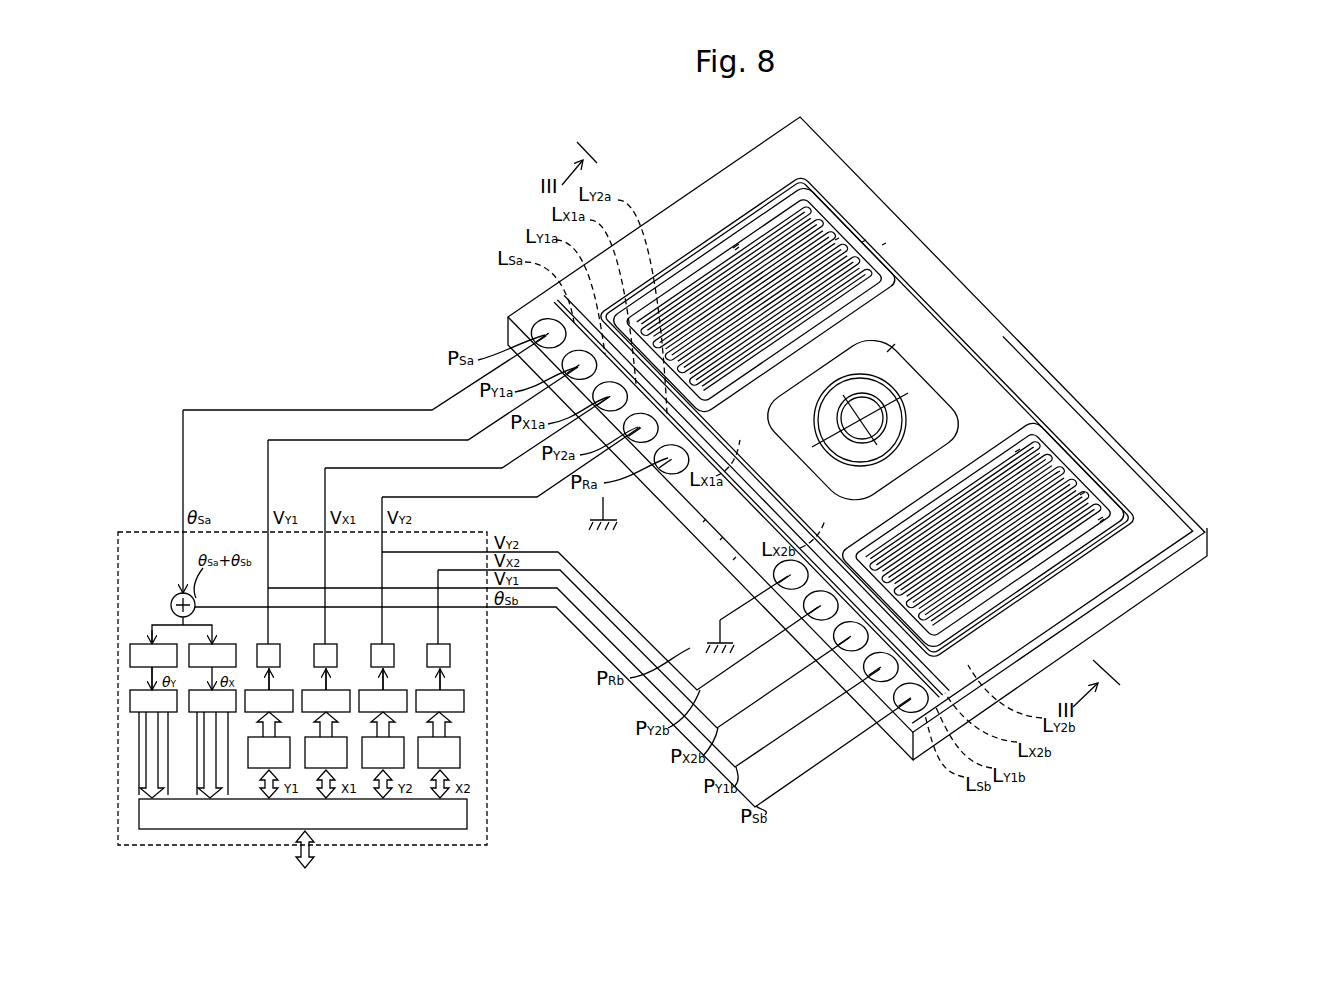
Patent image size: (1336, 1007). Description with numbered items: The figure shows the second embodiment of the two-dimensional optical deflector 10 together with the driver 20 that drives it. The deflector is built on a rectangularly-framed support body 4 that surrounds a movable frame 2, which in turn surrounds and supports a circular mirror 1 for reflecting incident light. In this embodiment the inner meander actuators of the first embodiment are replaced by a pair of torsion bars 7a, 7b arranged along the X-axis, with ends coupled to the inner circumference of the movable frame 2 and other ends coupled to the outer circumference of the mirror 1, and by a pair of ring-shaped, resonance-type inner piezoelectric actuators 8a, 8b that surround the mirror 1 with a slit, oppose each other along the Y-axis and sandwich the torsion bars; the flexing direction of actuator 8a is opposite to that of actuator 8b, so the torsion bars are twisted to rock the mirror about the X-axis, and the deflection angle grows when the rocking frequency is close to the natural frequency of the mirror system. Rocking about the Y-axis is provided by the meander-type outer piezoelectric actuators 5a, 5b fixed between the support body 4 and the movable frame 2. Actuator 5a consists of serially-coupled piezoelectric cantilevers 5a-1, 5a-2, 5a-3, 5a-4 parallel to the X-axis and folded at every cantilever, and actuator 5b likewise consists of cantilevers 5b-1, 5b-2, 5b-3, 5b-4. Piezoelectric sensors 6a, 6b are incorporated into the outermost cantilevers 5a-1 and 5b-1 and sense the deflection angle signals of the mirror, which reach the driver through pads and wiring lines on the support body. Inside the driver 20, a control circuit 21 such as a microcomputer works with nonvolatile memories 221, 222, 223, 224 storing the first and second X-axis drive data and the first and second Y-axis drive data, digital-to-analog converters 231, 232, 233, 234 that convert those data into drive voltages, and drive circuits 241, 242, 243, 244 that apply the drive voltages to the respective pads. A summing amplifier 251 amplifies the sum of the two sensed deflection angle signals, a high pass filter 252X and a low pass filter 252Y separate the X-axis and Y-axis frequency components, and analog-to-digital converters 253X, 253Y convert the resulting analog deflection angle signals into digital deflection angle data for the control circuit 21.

The two-dimensional optical deflector 10 is at (1103, 172).
The support body 4 is at (1152, 528).
The meander-type outer piezoelectric actuator 5a is at (1030, 143).
The piezoelectric cantilever 5a-1 is at (733, 248).
The piezoelectric sensor 6a is at (737, 248).
The piezoelectric cantilever 5a-2 is at (835, 240).
The piezoelectric cantilever 5a-3 is at (862, 242).
The piezoelectric cantilever 5a-4 is at (882, 245).
The meander-type outer piezoelectric actuator 5b is at (1240, 318).
The piezoelectric cantilever 5b-1 is at (1098, 520).
The piezoelectric sensor 6b is at (1102, 520).
The piezoelectric cantilever 5b-2 is at (1080, 495).
The piezoelectric cantilever 5b-3 is at (1055, 474).
The piezoelectric cantilever 5b-4 is at (1015, 452).
The mirror 1 is at (840, 400).
The movable frame 2 is at (878, 400).
The torsion bar 7a is at (720, 540).
The torsion bar 7b is at (887, 352).
The inner piezoelectric actuator 8a is at (703, 522).
The inner piezoelectric actuator 8b is at (733, 560).
The driver 20 is at (487, 730).
The control circuit 21 is at (467, 815).
The summing amplifier 251 is at (172, 597).
The low pass filter 252Y is at (146, 644).
The high pass filter 252X is at (210, 644).
The analog-to-digital converter 253Y is at (162, 714).
The analog-to-digital converter 253X is at (221, 714).
The drive circuit 243 is at (272, 644).
The drive circuit 241 is at (329, 644).
The drive circuit 244 is at (385, 644).
The drive circuit 242 is at (441, 644).
The digital-to-analog converter 233 is at (272, 690).
The digital-to-analog converter 231 is at (329, 690).
The digital-to-analog converter 234 is at (386, 690).
The digital-to-analog converter 232 is at (442, 690).
The nonvolatile memory 223 is at (273, 737).
The nonvolatile memory 221 is at (330, 737).
The nonvolatile memory 224 is at (387, 737).
The nonvolatile memory 222 is at (443, 737).